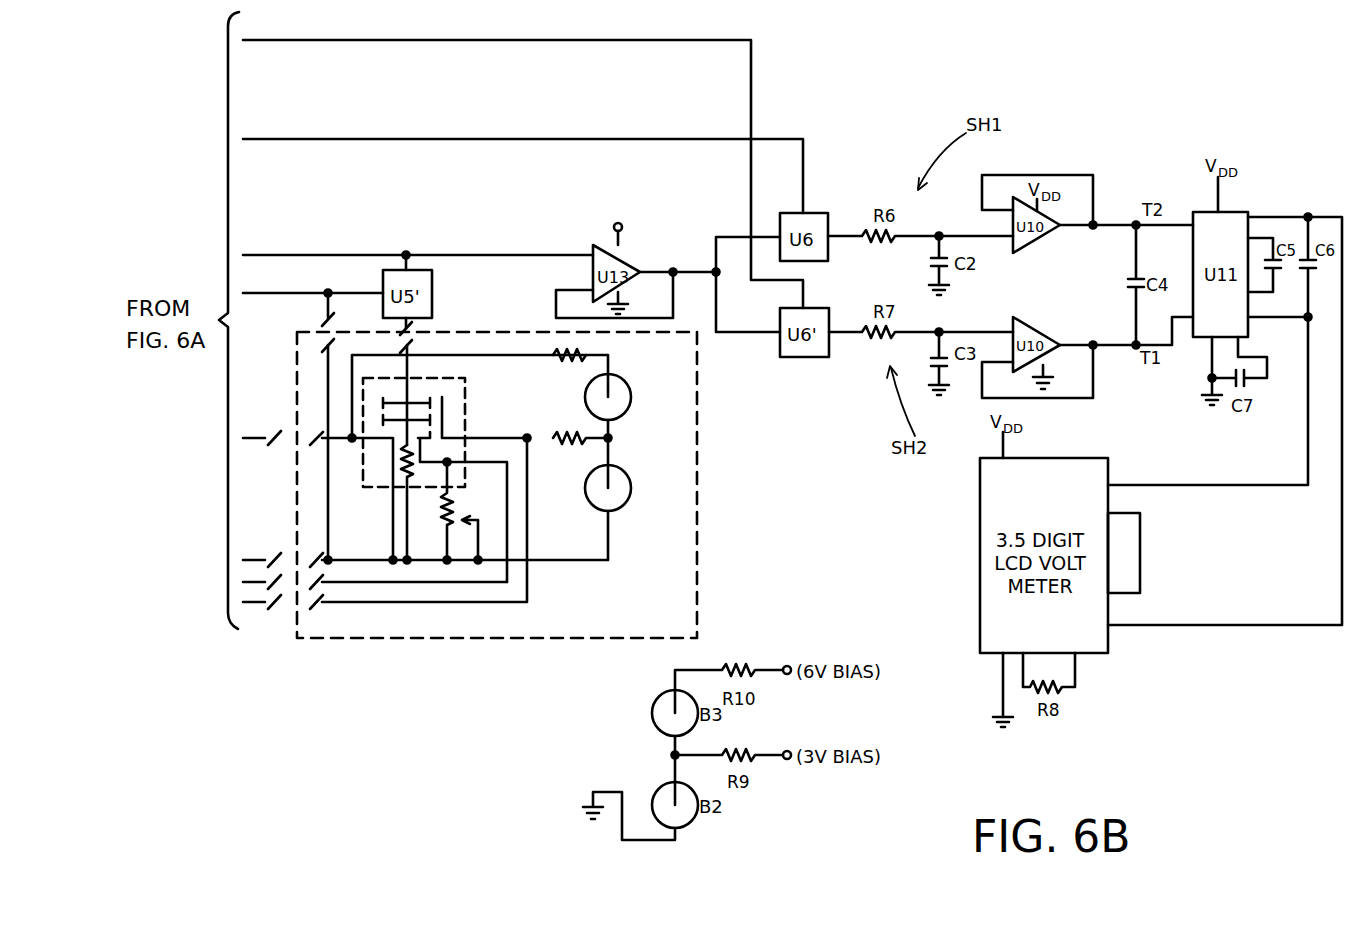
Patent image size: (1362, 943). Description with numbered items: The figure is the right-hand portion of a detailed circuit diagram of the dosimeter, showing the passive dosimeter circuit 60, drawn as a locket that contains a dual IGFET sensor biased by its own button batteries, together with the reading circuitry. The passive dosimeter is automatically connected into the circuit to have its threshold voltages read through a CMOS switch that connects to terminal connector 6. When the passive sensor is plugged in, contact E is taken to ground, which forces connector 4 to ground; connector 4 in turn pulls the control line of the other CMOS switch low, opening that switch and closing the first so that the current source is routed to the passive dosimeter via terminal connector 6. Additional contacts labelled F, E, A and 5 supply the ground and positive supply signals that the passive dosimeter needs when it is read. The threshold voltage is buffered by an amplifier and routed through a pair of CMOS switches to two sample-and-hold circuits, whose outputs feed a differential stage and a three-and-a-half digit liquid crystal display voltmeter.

The connector 4 is at (338, 322).
The contact 5 is at (413, 537).
The terminal connector 6 is at (412, 342).
The passive dosimeter circuit 60 is at (529, 485).